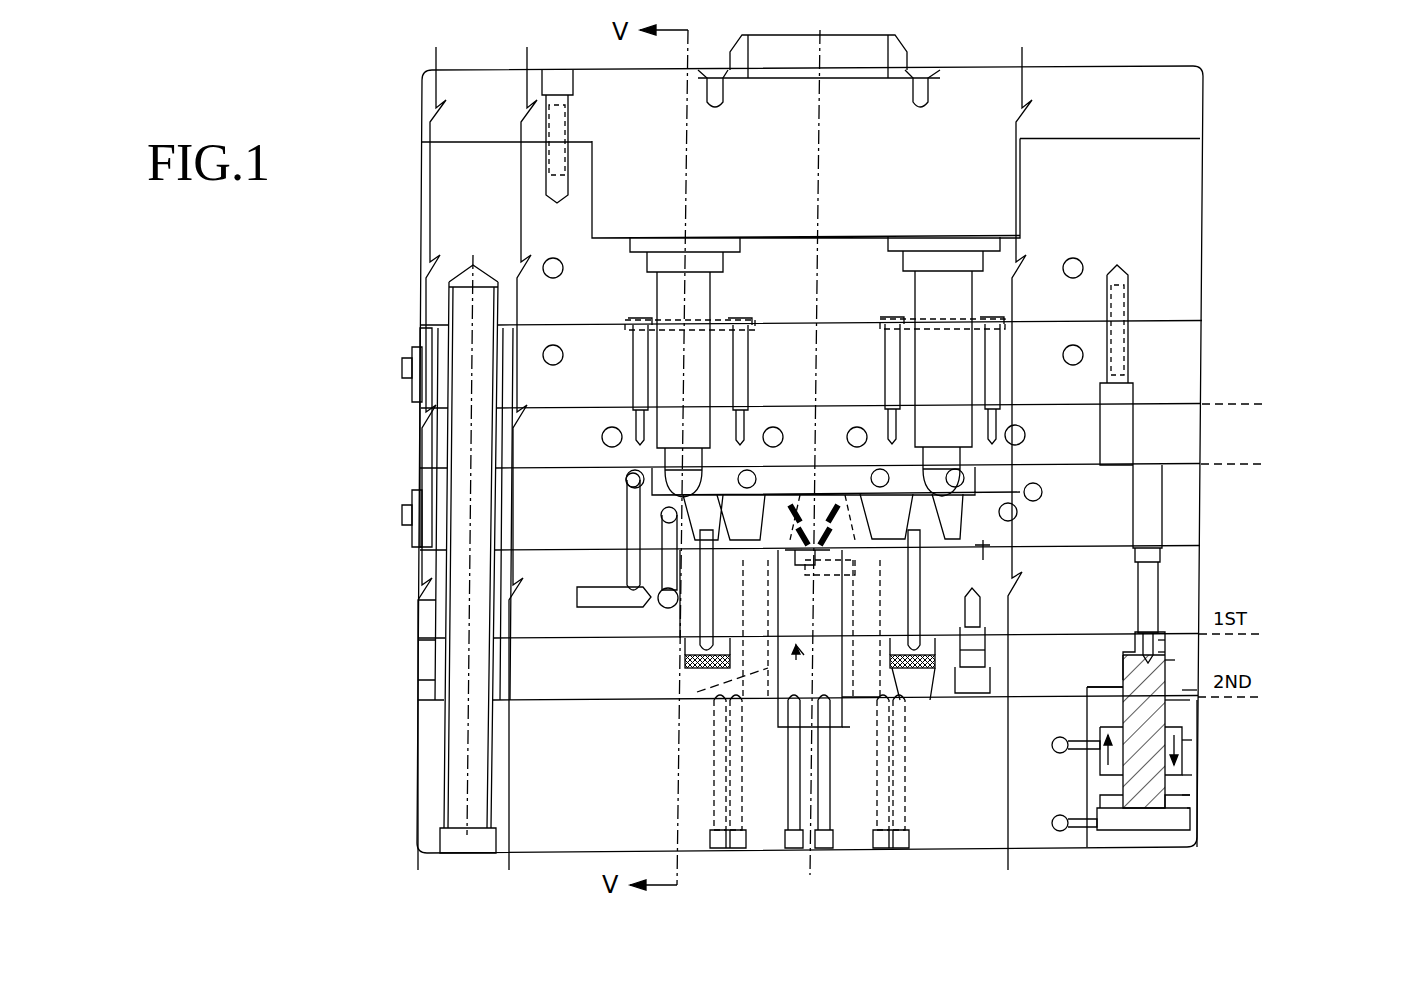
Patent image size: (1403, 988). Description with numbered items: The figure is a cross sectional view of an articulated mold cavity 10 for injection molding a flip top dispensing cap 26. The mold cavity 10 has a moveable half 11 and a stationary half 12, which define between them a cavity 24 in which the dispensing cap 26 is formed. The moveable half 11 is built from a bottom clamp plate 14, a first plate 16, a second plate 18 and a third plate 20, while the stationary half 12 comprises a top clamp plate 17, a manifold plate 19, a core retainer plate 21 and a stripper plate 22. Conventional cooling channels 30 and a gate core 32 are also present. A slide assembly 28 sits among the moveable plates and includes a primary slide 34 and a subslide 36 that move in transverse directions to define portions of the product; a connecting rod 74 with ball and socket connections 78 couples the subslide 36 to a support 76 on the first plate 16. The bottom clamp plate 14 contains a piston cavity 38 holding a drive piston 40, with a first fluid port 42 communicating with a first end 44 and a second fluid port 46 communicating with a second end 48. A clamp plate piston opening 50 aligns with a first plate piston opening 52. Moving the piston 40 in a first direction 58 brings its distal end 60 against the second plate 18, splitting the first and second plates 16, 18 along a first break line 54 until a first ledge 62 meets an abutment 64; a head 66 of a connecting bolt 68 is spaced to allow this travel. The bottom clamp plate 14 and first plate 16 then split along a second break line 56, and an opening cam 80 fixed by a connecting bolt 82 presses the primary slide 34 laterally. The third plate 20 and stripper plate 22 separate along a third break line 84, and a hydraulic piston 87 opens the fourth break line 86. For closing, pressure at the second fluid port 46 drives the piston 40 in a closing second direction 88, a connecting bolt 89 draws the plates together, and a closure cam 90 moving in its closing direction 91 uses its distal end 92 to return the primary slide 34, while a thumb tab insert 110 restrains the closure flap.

The mold cavity 10 is at (1208, 843).
The moveable half 11 is at (404, 512).
The stationary half 12 is at (1222, 182).
The bottom clamp plate 14 is at (1202, 757).
The first plate 16 is at (420, 668).
The top clamp plate 17 is at (1212, 94).
The second plate 18 is at (422, 612).
The manifold plate 19 is at (1192, 240).
The third plate 20 is at (432, 540).
The core retainer plate 21 is at (420, 382).
The stripper plate 22 is at (408, 460).
The cavity 24 is at (1042, 496).
The dispensing cap 26 is at (1017, 514).
The slide assembly 28 is at (925, 545).
The cooling channels 30 is at (640, 370).
The gate core 32 is at (990, 355).
The primary slide 34 is at (825, 560).
The subslide 36 is at (918, 560).
The piston cavity 38 is at (1192, 795).
The drive piston 40 is at (1170, 672).
The first fluid port 42 is at (1097, 825).
The first end 44 is at (1196, 818).
The second fluid port 46 is at (1092, 720).
The second end 48 is at (1192, 740).
The clamp plate piston opening 50 is at (1120, 698).
The first plate piston opening 52 is at (1190, 703).
The first break line 54 is at (1176, 662).
The second break line 56 is at (1197, 690).
The first direction 58 is at (1108, 748).
The distal end 60 is at (1163, 640).
The first ledge 62 is at (1163, 655).
The abutment 64 is at (1122, 690).
The head 66 is at (965, 700).
The connecting bolt 68 is at (985, 693).
The connecting rod 74 is at (870, 600).
The support 76 is at (912, 685).
The ball and socket connections 78 is at (880, 540).
The opening cam 80 is at (887, 690).
The connecting bolt 82 is at (880, 790).
The third break line 84 is at (1262, 430).
The fourth break line 86 is at (1262, 402).
The hydraulic piston 87 is at (1152, 550).
The closing second direction 88 is at (1192, 777).
The connecting bolt 89 is at (1166, 628).
The closure cam 90 is at (838, 760).
The closing direction 91 is at (772, 705).
The distal end 92 is at (830, 520).
The thumb tab insert 110 is at (992, 552).